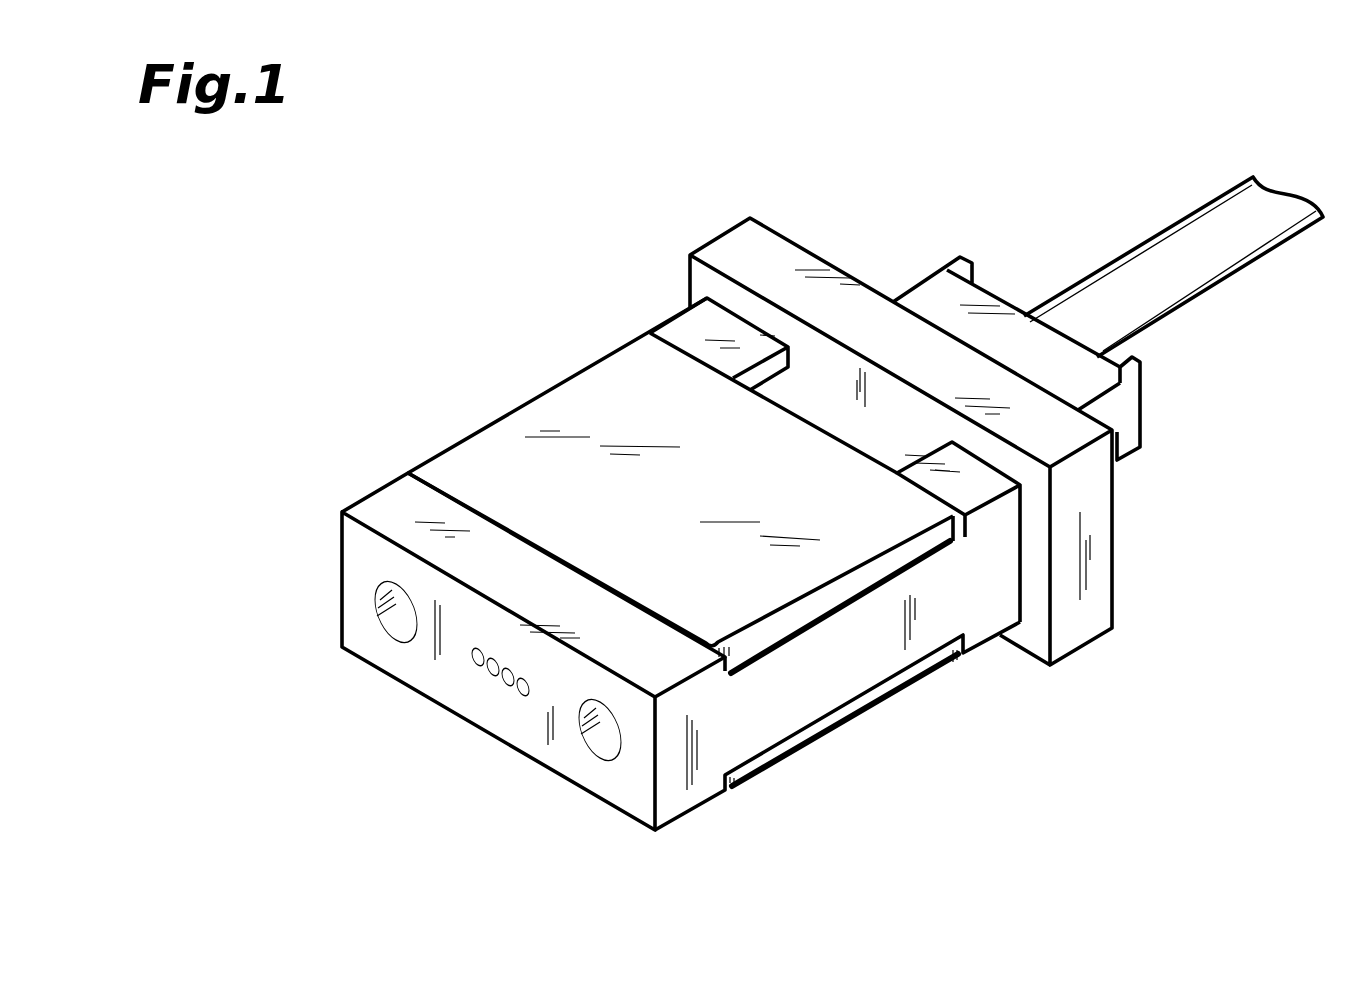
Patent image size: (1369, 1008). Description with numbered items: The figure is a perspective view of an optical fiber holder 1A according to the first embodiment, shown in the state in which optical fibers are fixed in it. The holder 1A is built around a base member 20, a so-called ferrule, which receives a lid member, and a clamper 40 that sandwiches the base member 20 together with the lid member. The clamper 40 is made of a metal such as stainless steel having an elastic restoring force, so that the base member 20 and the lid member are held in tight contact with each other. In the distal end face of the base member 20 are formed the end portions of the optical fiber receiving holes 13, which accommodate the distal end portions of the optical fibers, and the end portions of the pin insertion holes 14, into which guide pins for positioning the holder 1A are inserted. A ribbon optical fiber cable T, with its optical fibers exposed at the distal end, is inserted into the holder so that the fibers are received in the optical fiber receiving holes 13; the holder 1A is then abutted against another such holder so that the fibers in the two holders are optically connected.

The optical fiber holder 1A is at (1007, 240).
The base member 20 is at (683, 800).
The clamper 40 is at (627, 390).
The optical fiber receiving holes 13 is at (503, 683).
The pin insertion holes 14 is at (599, 760).
The ribbon optical fiber cable T is at (1198, 248).